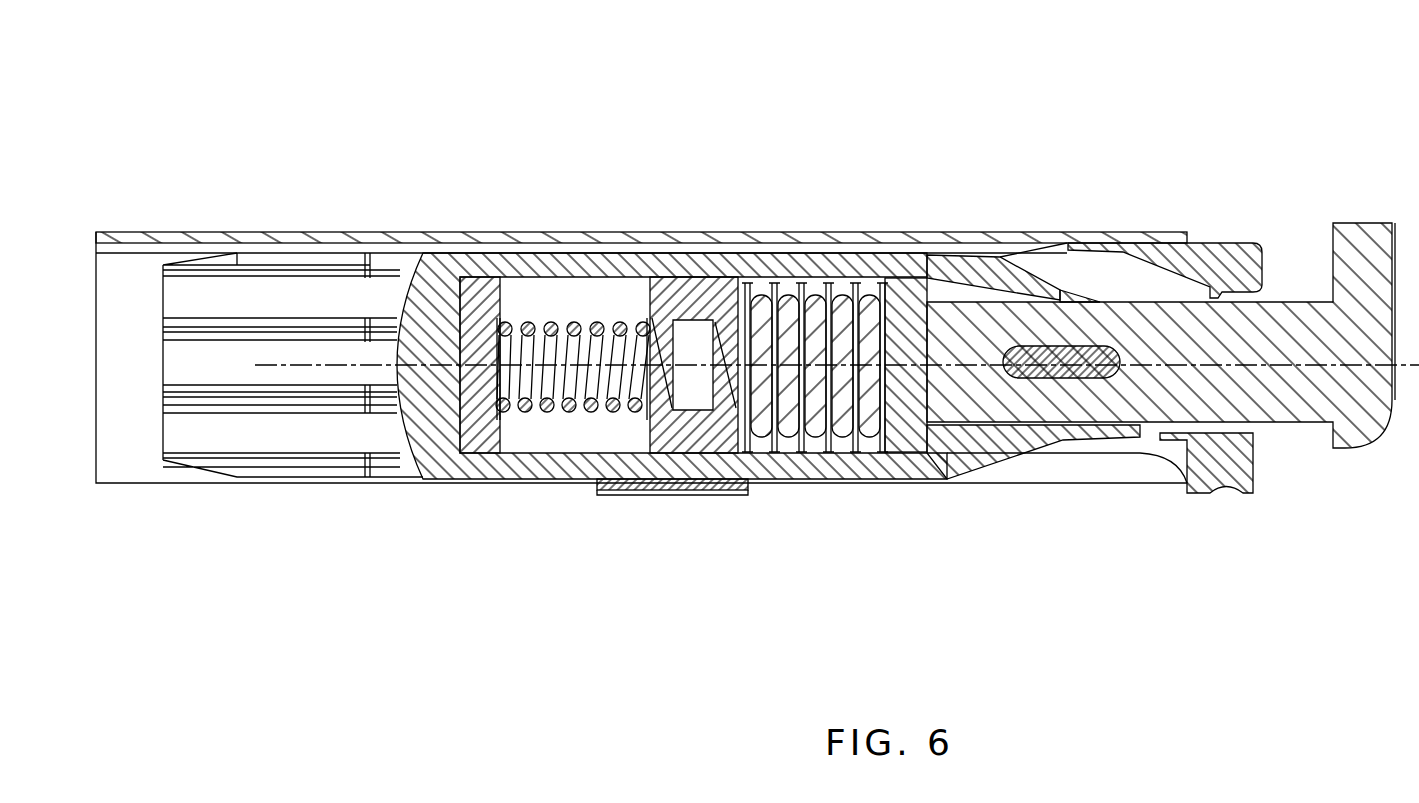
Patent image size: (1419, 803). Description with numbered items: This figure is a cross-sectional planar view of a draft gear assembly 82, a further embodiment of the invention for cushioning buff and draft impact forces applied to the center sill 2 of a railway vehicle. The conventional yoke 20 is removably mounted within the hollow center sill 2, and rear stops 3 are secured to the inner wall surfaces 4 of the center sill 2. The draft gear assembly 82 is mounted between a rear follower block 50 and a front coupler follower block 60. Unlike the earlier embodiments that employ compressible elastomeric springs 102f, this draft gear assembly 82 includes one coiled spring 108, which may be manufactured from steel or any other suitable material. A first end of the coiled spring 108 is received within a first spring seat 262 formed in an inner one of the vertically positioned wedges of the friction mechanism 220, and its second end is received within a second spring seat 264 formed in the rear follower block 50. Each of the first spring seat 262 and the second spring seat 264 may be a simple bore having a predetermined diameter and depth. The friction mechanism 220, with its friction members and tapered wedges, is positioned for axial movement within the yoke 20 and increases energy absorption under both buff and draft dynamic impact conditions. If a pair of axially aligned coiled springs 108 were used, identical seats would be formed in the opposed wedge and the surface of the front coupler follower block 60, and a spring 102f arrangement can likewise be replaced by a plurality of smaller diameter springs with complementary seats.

The center sill 2 is at (228, 232).
The rear stops 3 is at (163, 385).
The inner wall surfaces 4 is at (108, 313).
The yoke 20 is at (977, 265).
The rear follower block 50 is at (482, 277).
The front coupler follower block 60 is at (905, 276).
The draft gear assembly 82 is at (842, 92).
The compressible spring 102f is at (828, 497).
The coiled spring 108 is at (572, 410).
The friction mechanism 220 is at (688, 503).
The first spring seat 262 is at (657, 400).
The second spring seat 264 is at (505, 320).